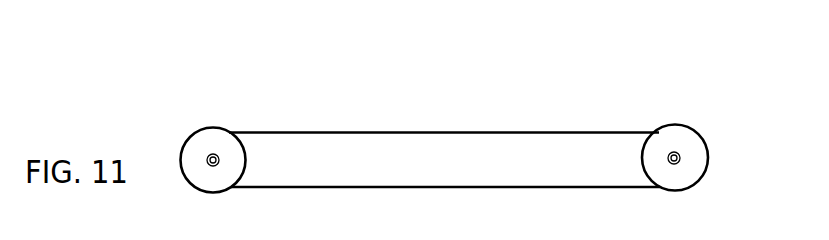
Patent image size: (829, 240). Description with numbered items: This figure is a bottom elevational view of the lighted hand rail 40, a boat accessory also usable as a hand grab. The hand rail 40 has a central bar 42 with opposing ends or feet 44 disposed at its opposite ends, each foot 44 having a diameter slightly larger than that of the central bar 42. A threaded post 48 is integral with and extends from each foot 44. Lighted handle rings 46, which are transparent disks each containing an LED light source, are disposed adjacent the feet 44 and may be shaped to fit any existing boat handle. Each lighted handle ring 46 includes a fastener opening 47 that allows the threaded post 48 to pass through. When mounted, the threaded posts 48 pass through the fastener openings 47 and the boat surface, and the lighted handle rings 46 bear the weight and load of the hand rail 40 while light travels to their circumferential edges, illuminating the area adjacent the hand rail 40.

The hand rail 40 is at (708, 77).
The central bar 42 is at (370, 153).
The foot 44 is at (653, 132).
The lighted handle ring 46 is at (218, 138).
The fastener opening 47 is at (681, 155).
The threaded post 48 is at (675, 163).